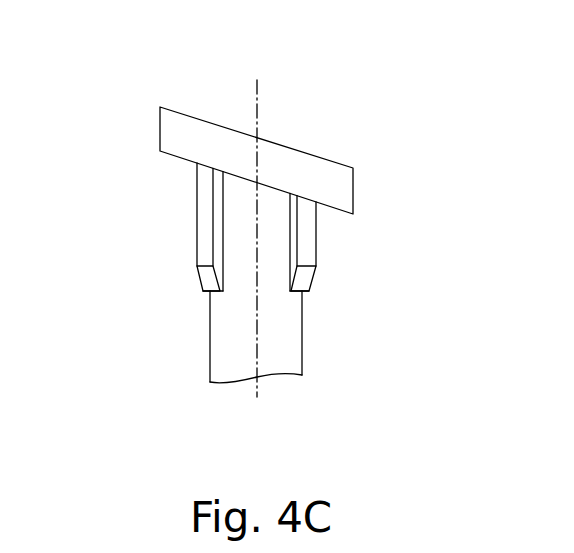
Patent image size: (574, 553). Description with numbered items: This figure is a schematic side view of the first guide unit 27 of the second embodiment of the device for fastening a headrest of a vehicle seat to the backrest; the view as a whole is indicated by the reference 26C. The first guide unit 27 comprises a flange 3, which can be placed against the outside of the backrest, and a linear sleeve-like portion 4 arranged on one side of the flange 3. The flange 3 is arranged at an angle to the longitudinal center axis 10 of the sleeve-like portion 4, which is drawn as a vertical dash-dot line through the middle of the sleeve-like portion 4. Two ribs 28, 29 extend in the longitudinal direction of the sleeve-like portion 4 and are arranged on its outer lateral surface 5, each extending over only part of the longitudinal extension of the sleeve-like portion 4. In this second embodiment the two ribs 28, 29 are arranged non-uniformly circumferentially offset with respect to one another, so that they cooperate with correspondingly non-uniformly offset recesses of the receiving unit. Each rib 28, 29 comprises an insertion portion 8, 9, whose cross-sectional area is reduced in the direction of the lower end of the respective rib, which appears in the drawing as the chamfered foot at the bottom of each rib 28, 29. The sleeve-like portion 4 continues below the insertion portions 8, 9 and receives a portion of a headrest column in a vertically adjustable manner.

The fastening assembly 26C is at (305, 77).
The flange 3 is at (297, 168).
The longitudinal center axis 10 is at (257, 120).
The first guide unit 27 is at (120, 221).
The rib 28 is at (197, 203).
The rib 29 is at (307, 215).
The insertion portion 8 is at (203, 278).
The insertion portion 9 is at (303, 280).
The outer lateral surface 5 is at (207, 342).
The sleeve-like portion 4 is at (287, 327).